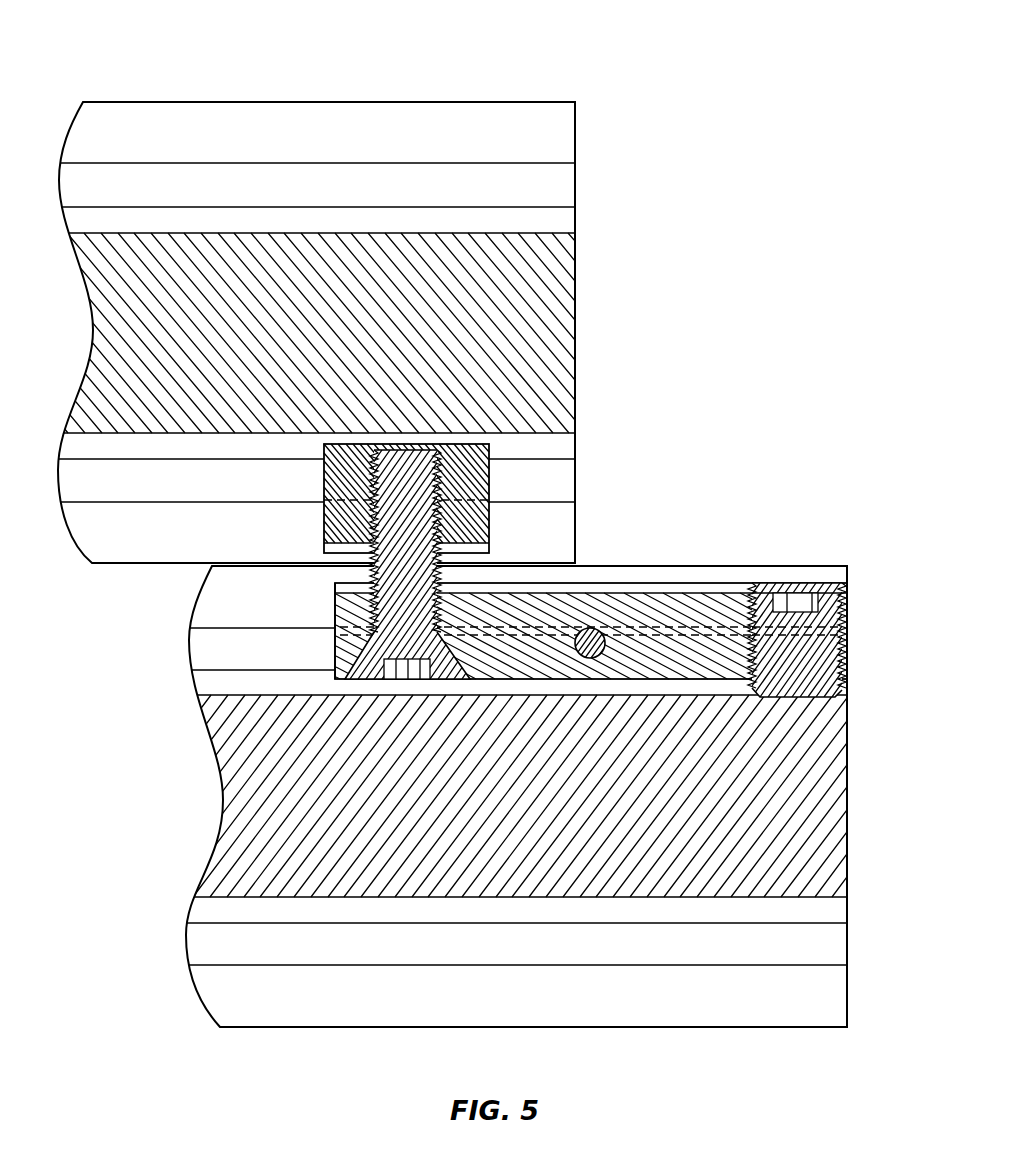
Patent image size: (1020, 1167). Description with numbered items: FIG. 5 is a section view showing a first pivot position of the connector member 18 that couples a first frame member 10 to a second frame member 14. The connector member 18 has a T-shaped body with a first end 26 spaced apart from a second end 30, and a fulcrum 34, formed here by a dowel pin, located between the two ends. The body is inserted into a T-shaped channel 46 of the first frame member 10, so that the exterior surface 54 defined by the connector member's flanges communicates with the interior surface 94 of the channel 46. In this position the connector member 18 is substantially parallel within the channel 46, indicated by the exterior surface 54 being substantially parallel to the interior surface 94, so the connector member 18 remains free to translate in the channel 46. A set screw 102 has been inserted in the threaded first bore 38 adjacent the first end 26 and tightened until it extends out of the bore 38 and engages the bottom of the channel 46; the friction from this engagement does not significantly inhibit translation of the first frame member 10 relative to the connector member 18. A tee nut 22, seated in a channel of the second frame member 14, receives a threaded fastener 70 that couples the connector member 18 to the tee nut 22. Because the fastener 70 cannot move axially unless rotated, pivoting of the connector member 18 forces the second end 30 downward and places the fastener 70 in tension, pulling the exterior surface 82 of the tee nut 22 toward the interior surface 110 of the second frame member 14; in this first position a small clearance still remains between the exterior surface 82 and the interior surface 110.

The first frame member 10 is at (710, 1042).
The second frame member 14 is at (371, 82).
The connector member 18 is at (700, 608).
The tee nut 22 is at (464, 458).
The first end 26 is at (845, 607).
The second end 30 is at (352, 625).
The fulcrum 34 is at (592, 628).
The first bore 38 is at (778, 592).
The channel 46 is at (191, 688).
The exterior surface 54 is at (358, 626).
The fastener 70 is at (407, 645).
The exterior surface 82 is at (490, 523).
The interior surface 94 is at (340, 648).
The set screw 102 is at (800, 657).
The interior surface 110 is at (490, 478).